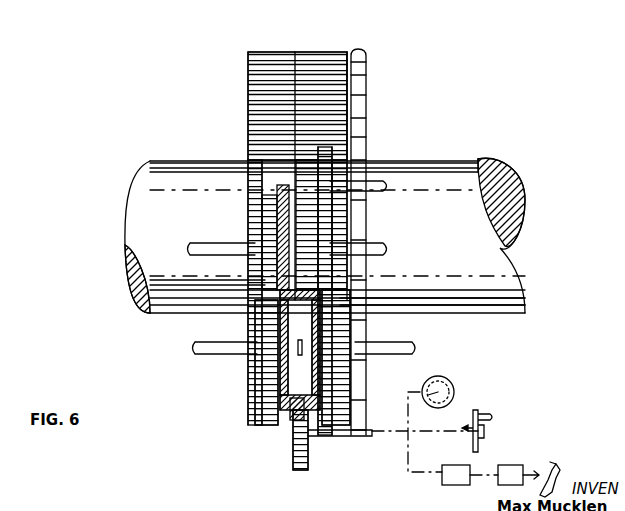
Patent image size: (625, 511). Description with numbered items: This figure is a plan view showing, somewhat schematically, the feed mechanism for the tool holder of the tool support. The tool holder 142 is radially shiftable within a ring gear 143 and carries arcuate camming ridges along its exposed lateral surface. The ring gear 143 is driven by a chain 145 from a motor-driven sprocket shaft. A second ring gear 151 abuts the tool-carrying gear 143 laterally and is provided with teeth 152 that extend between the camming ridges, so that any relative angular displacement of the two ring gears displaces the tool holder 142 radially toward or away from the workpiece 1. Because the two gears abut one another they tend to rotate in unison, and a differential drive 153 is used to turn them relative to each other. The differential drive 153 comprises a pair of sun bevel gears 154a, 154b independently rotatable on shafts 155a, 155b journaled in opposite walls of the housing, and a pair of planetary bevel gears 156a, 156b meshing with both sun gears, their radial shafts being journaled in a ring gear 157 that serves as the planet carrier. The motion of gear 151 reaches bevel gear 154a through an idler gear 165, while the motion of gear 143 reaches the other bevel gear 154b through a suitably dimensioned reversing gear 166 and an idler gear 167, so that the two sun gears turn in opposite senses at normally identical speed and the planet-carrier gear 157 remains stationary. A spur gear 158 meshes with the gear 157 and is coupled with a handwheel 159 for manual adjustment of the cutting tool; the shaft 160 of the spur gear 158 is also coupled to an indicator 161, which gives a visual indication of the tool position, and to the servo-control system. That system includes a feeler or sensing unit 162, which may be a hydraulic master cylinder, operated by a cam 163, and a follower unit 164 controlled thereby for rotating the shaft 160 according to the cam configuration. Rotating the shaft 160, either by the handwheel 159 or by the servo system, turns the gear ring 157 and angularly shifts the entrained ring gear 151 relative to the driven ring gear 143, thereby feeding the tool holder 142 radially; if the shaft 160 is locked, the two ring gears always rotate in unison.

The workpiece 1 is at (472, 160).
The ring gear 143 is at (316, 52).
The chain 145 is at (364, 52).
The ring gear 151 is at (252, 70).
The tool holder 142 is at (270, 202).
The teeth 152 is at (262, 220).
The idler gear 165 is at (262, 265).
The reversing gear 166 is at (338, 200).
The idler gear 167 is at (340, 262).
The differential drive 153 is at (362, 306).
The bevel gear 154a is at (262, 365).
The bevel gear 154b is at (355, 362).
The shaft 155a is at (195, 348).
The shaft 155b is at (416, 348).
The planetary bevel gear 156a is at (278, 320).
The planetary bevel gear 156b is at (268, 398).
The ring gear 157 is at (288, 418).
The spur gear 158 is at (308, 462).
The shaft 160 is at (350, 437).
The indicator 161 is at (456, 382).
The handwheel 159 is at (480, 420).
The follower unit 164 is at (460, 465).
The sensing unit 162 is at (520, 465).
The cam 163 is at (560, 462).